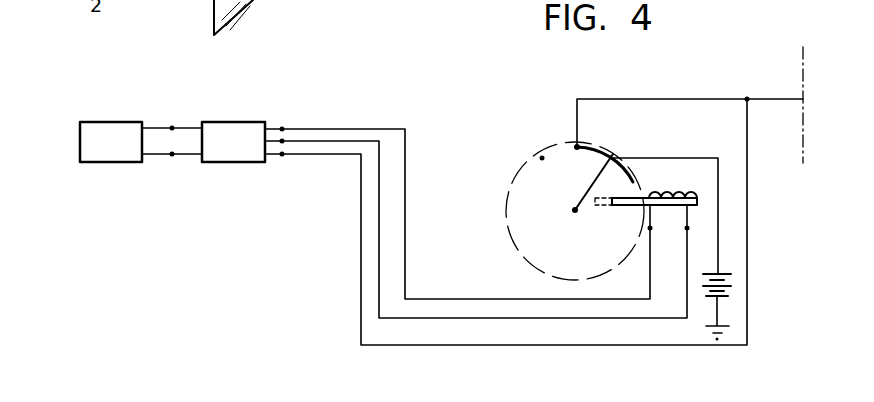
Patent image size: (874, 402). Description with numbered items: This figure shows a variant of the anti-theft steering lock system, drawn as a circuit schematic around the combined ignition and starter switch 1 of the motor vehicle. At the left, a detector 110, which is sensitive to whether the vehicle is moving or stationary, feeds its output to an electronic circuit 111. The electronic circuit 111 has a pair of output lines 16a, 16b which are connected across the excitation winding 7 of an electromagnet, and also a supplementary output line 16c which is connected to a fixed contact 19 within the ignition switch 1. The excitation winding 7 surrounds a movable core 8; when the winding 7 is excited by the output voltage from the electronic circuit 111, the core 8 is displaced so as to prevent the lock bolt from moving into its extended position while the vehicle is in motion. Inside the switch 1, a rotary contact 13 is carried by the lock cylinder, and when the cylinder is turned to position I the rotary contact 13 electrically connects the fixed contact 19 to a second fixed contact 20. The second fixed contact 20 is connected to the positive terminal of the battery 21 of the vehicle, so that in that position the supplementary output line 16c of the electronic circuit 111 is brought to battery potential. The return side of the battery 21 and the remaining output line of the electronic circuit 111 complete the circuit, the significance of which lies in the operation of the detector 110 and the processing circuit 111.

The combined ignition and starter switch 1 is at (518, 152).
The excitation winding 7 is at (670, 192).
The movable core 8 is at (697, 201).
The rotary contact 13 is at (587, 188).
The fixed contact 19 is at (579, 146).
The second fixed contact 20 is at (611, 152).
The battery 21 is at (732, 303).
The output line 16a is at (285, 129).
The output line 16b is at (285, 142).
The supplementary output line 16c is at (284, 156).
The detector 110 is at (111, 152).
The electronic circuit 111 is at (221, 152).